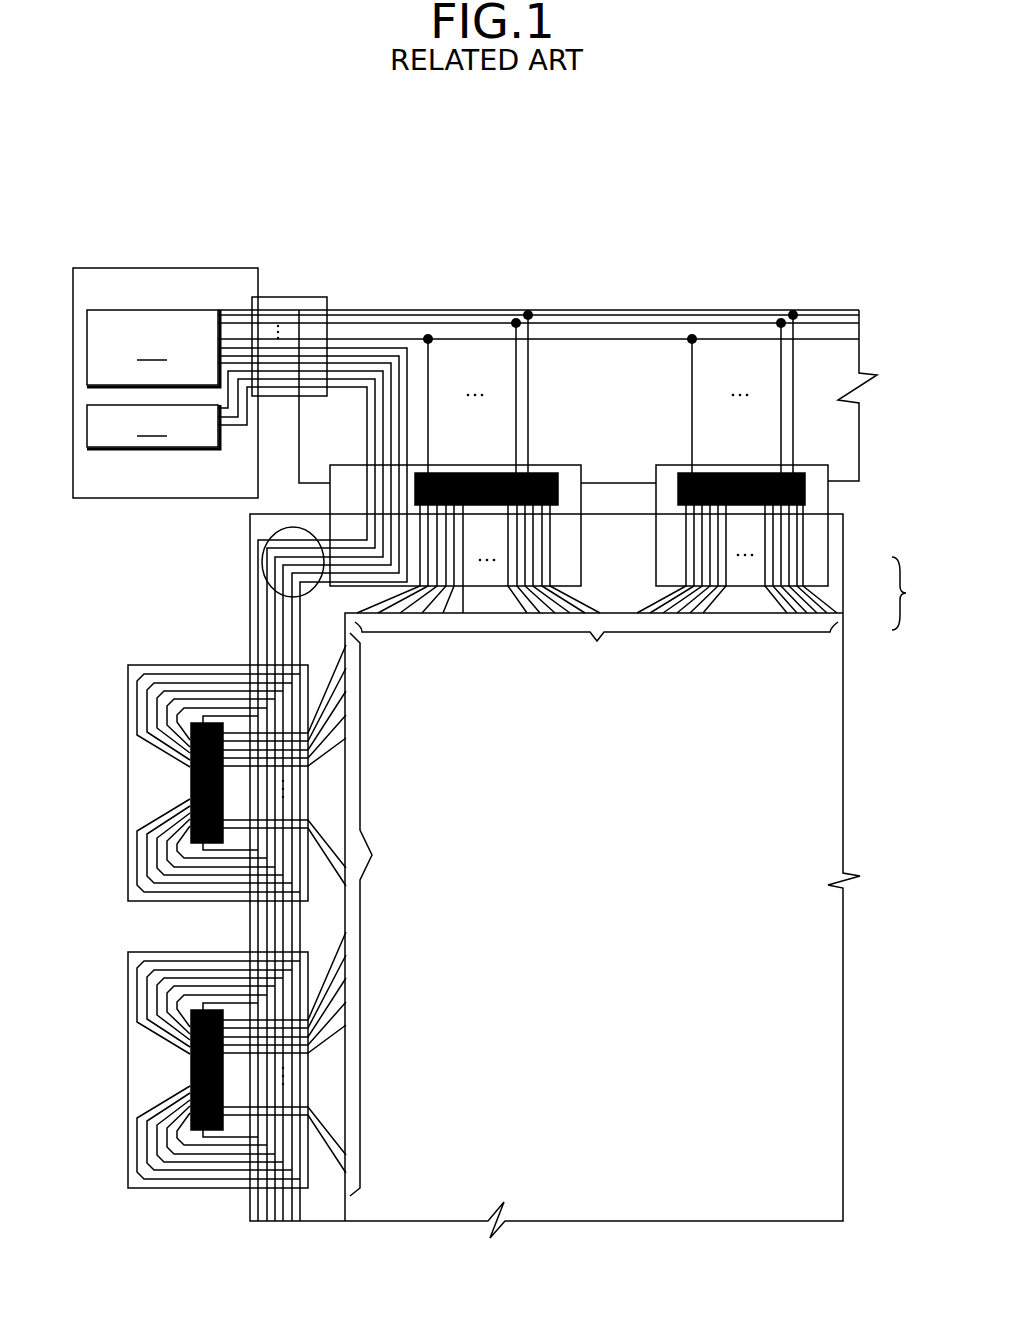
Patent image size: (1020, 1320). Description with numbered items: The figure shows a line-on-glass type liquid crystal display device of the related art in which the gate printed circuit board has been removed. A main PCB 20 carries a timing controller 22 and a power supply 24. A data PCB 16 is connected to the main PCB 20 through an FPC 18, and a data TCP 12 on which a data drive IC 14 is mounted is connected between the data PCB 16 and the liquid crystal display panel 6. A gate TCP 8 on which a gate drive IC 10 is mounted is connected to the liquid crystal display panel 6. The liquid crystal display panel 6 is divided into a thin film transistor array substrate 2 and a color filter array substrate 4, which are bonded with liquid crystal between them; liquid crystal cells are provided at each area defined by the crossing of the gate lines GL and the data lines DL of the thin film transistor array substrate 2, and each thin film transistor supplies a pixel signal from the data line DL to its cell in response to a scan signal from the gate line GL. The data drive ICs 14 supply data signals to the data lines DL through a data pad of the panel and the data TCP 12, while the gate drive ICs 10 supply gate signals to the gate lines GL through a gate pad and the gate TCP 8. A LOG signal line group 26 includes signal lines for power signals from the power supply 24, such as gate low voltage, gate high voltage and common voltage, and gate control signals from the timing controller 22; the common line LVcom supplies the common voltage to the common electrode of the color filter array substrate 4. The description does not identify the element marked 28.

The thin film transistor array substrate 2 is at (843, 560).
The color filter array substrate 4 is at (838, 637).
The liquid crystal display panel 6 is at (907, 593).
The gate TCP 8 is at (202, 665).
The gate drive IC 10 is at (190, 787).
The data TCP 12 is at (828, 474).
The data drive IC 14 is at (805, 492).
The data PCB 16 is at (791, 308).
The FPC 18 is at (325, 293).
The main PCB 20 is at (208, 267).
The timing controller 22 is at (153, 348).
The power supply 24 is at (153, 427).
The LOG signal line group 26 is at (262, 560).
The gate control signal line 28 is at (368, 428).
The data line DL is at (596, 647).
The gate line GL is at (377, 914).
The common line LVcom is at (137, 690).